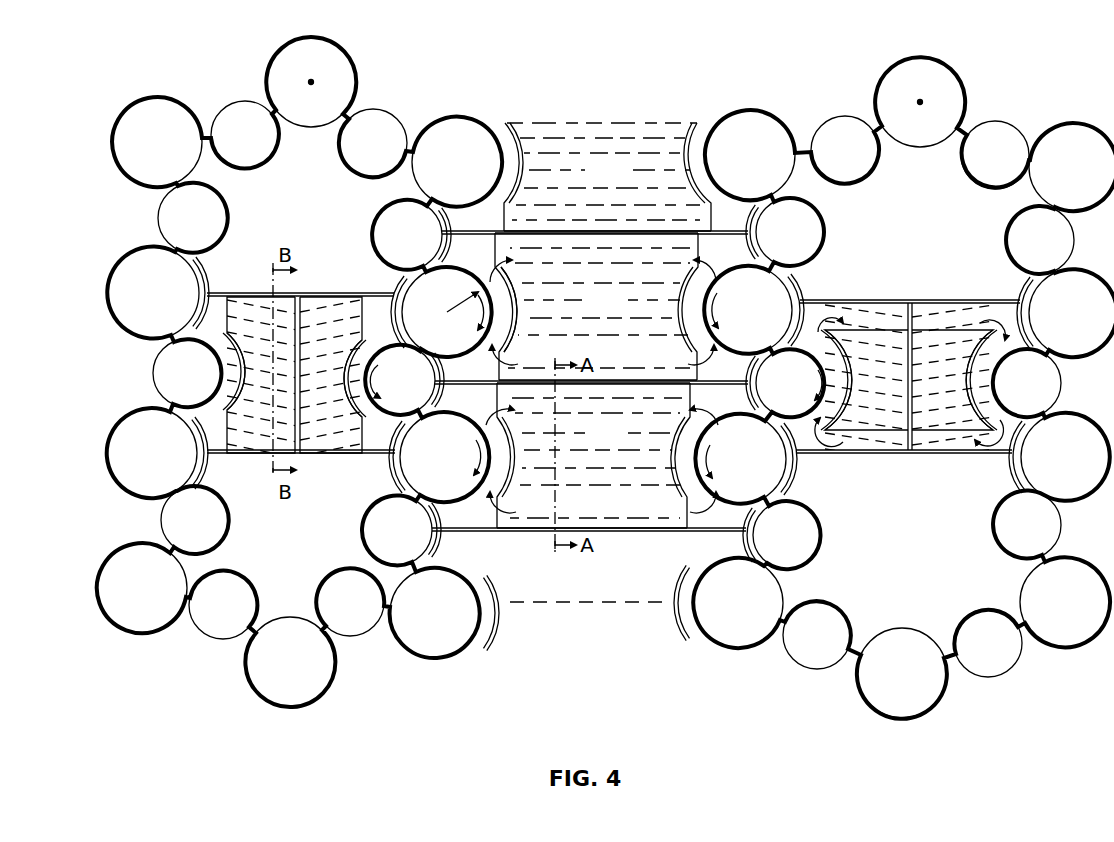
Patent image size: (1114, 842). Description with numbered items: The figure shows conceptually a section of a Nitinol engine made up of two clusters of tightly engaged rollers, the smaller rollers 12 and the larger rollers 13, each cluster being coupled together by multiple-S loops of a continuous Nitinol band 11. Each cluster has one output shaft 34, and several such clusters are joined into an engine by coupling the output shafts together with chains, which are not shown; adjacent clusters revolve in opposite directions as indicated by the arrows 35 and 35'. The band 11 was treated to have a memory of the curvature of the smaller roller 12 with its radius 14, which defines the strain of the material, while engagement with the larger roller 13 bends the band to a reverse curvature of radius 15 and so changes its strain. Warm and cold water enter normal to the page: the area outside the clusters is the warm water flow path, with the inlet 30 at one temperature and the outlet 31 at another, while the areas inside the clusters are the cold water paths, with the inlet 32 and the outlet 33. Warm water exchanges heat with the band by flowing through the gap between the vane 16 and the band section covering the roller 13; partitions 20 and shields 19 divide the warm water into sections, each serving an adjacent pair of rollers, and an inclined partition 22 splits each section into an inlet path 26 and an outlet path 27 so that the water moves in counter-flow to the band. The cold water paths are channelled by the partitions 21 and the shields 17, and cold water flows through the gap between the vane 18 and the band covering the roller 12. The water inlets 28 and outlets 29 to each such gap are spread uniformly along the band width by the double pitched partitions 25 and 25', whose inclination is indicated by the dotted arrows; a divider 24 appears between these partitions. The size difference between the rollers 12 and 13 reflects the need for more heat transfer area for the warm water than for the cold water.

The continuous Nitinol band 11 is at (182, 186).
The smaller roller 12 is at (183, 229).
The larger roller 13 is at (147, 153).
The radius of the smaller roller 14 is at (428, 376).
The radius of reverse curvature 15 is at (466, 291).
The vane 16 is at (518, 291).
The shield 17 is at (398, 283).
The vane 18 is at (239, 396).
The shield 19 is at (443, 247).
The partition 20 is at (586, 236).
The partition 21 is at (310, 293).
The inclined partition 22 is at (597, 175).
The divider 24 is at (913, 440).
The double pitched partition 25 is at (565, 379).
The double pitched partition 25' is at (648, 379).
The inlet path 26 is at (600, 433).
The outlet path 27 is at (602, 334).
The water inlet 28 is at (910, 377).
The water outlet 29 is at (911, 378).
The warm water inlet 30 is at (574, 627).
The warm water outlet 31 is at (621, 635).
The cold water inlet 32 is at (910, 561).
The cold water outlet 33 is at (907, 587).
The output shaft 34 is at (311, 82).
The arrow of rotation 35 is at (451, 294).
The arrow of rotation 35' is at (750, 275).